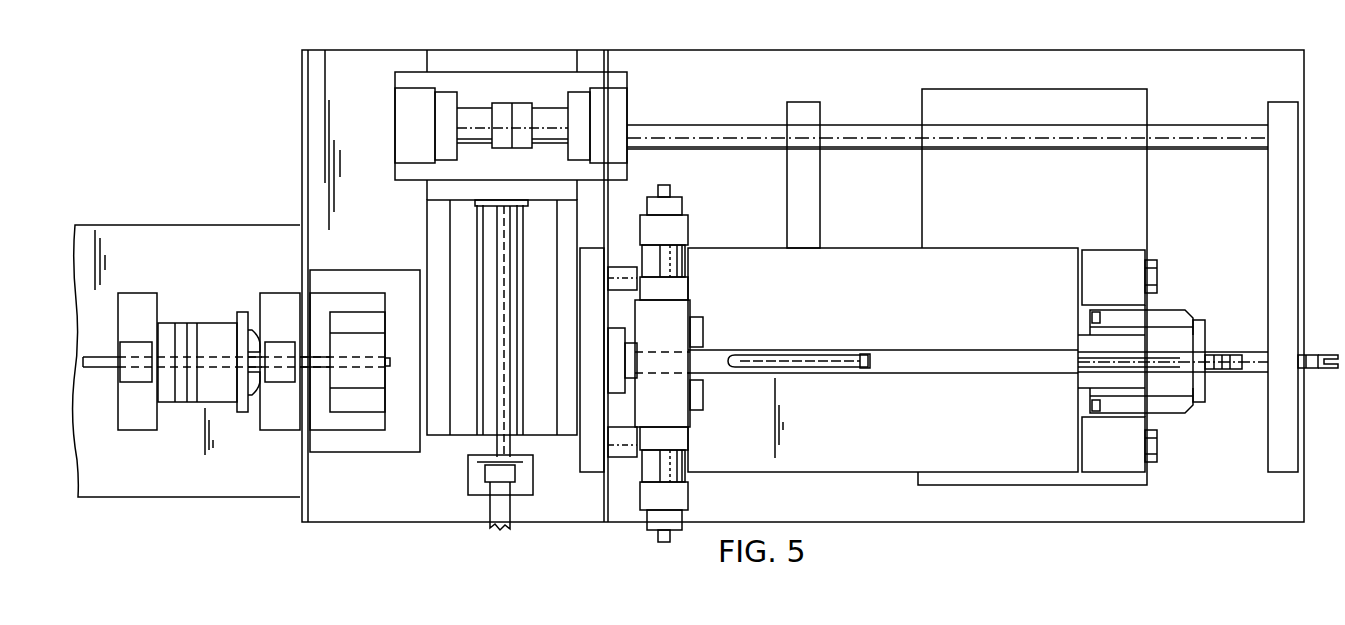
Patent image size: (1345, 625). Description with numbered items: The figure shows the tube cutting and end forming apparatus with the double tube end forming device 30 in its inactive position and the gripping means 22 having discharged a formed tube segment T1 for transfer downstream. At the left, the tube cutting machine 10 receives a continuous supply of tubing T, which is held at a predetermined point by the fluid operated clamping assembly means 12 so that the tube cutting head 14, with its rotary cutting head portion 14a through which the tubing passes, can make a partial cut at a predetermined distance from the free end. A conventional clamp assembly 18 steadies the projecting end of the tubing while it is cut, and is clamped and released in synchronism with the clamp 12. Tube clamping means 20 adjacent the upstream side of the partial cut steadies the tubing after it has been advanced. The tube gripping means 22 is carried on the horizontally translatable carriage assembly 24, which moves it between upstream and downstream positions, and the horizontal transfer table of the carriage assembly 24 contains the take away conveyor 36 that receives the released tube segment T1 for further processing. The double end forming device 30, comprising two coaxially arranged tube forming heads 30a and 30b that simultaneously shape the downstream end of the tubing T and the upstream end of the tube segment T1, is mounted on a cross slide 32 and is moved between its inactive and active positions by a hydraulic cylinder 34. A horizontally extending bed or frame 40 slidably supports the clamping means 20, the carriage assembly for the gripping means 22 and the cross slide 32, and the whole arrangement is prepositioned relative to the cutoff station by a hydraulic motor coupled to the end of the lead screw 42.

The tube cutting machine 10 is at (243, 478).
The fluid operated clamping assembly means 12 is at (143, 293).
The tube cutting head 14 is at (210, 323).
The rotary cutting head portion 14a is at (252, 330).
The clamp assembly 18 is at (290, 308).
The tube clamping means 20 is at (373, 322).
The tube gripping means 22 is at (672, 415).
The carriage assembly 24 is at (916, 434).
The double tube end forming device 30 is at (514, 90).
The tube forming head 30a is at (407, 105).
The tube forming head 30b is at (625, 108).
The cross slide 32 is at (488, 397).
The hydraulic cylinder 34 is at (492, 507).
The take away conveyor 36 is at (989, 362).
The bed or frame 40 is at (555, 500).
The lead screw 42 is at (1312, 369).
The tubing T is at (102, 355).
The tube segment T1 is at (833, 364).